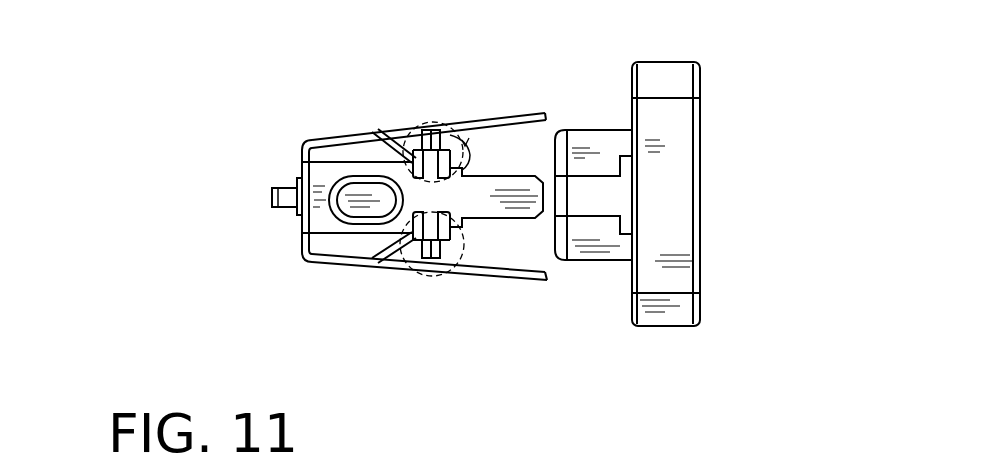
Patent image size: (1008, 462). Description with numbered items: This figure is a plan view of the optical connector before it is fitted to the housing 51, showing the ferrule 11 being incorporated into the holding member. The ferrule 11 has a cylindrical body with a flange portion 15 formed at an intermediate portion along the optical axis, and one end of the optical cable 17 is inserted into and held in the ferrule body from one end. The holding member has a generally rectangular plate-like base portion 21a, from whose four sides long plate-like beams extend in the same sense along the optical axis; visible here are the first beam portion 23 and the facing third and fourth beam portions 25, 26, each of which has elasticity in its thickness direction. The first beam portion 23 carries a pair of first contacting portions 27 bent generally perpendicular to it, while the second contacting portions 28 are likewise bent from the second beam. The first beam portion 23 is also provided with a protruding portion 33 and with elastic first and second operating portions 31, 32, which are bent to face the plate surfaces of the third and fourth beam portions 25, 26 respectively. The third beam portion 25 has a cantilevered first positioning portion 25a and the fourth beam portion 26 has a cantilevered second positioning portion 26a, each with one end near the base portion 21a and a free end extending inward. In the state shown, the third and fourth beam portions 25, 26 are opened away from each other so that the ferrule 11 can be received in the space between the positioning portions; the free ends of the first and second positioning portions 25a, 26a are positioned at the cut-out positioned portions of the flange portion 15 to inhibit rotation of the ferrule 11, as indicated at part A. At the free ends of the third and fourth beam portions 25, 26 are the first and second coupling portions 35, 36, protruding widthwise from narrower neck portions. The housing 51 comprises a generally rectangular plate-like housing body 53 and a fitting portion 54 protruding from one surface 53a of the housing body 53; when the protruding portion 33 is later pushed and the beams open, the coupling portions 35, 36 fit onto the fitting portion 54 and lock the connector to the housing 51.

The ferrule 11 is at (297, 212).
The flange portion 15 is at (407, 260).
The optical cable 17 is at (272, 197).
The base portion 21a is at (302, 154).
The first beam portion 23 is at (508, 207).
The third beam portion 25 is at (340, 268).
The first positioning portion 25a is at (383, 272).
The fourth beam portion 26 is at (405, 148).
The second positioning portion 26a is at (390, 143).
The first contacting portions 27 is at (460, 225).
The second contacting portions 28 is at (472, 128).
The first operating portion 31 is at (428, 262).
The second operating portion 32 is at (436, 148).
The protruding portion 33 is at (362, 192).
The first coupling portions 35 is at (563, 331).
The second coupling portions 36 is at (538, 113).
The housing 51 is at (706, 172).
The housing body 53 is at (705, 208).
The one surface of the housing body 53a is at (630, 80).
The fitting portion 54 is at (577, 128).
The part A is at (466, 130).